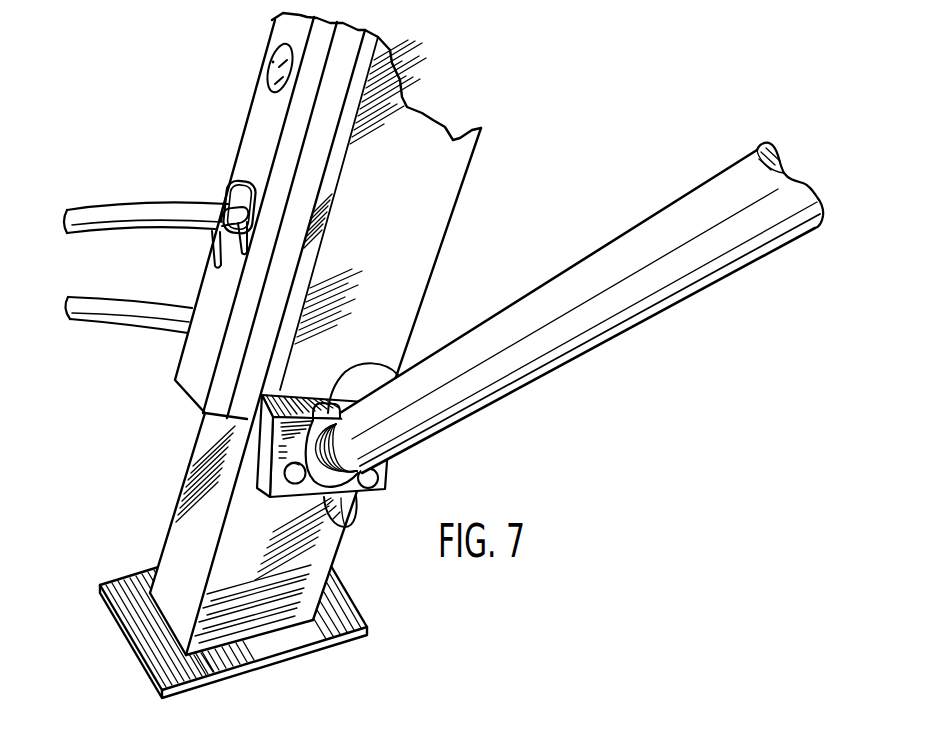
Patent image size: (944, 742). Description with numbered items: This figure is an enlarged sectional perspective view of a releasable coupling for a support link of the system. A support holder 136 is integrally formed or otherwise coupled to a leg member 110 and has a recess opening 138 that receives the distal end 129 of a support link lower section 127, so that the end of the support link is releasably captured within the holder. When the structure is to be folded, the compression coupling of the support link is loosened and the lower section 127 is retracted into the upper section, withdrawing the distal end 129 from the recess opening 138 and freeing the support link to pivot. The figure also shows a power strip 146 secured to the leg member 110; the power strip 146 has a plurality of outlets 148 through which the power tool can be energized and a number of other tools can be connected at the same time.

The leg member 110 is at (198, 513).
The support link lower section 127 is at (570, 362).
The distal end 129 is at (350, 516).
The support holder 136 is at (396, 463).
The recess opening 138 is at (398, 375).
The power strip 146 is at (247, 150).
The outlets 148 is at (269, 50).